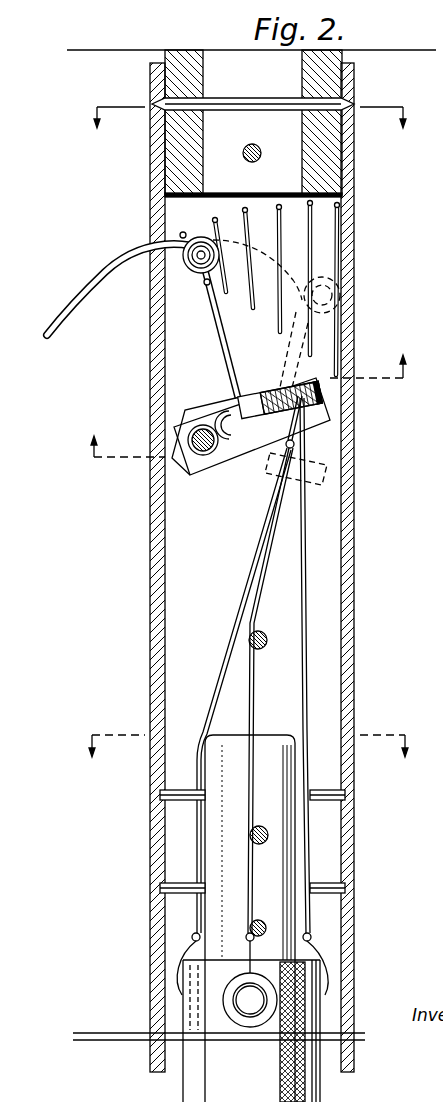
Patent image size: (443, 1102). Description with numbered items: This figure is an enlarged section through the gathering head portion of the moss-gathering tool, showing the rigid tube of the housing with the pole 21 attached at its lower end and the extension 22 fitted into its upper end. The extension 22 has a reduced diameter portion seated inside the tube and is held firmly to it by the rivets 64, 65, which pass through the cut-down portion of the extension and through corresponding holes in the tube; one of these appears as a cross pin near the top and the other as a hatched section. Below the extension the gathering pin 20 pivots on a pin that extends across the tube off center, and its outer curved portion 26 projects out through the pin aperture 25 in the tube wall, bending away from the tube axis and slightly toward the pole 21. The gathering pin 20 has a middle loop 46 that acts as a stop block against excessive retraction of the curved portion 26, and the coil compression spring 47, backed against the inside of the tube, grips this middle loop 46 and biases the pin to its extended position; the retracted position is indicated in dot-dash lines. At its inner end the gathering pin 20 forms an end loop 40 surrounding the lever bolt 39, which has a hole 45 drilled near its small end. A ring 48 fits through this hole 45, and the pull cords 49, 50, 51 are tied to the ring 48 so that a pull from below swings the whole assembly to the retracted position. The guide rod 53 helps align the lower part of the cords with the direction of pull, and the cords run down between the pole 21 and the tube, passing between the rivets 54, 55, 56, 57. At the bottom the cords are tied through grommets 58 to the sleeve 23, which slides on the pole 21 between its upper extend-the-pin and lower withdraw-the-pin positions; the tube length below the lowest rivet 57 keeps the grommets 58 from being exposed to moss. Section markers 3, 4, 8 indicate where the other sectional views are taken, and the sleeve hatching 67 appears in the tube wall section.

The section line 3- 3 is at (250, 734).
The section line 4- 4 is at (249, 417).
The section line 8- 8 is at (249, 105).
The gathering pin 20 is at (137, 280).
The pole 21 is at (215, 845).
The extension 22 is at (153, 59).
The sleeve 23 is at (212, 1052).
The pin aperture 25 is at (180, 262).
The outer curved portion 26 is at (75, 300).
The lever bolt 39 is at (276, 362).
The end loop 40 is at (251, 430).
The hole 45 is at (308, 403).
The middle loop 46 is at (196, 243).
The coil compression spring 47 is at (312, 237).
The ring 48 is at (297, 433).
The pull cord 49 is at (300, 510).
The pull cord 50 is at (273, 543).
The pull cord 51 is at (248, 592).
The guide rod 53 is at (267, 638).
The rivet 54 is at (338, 793).
The rivet 55 is at (268, 835).
The rivet 56 is at (345, 888).
The rivet 57 is at (265, 925).
The grommet 58 is at (268, 988).
The rivet 64 is at (262, 158).
The rivet 65 is at (353, 100).
The bushing sleeve 67 is at (323, 133).